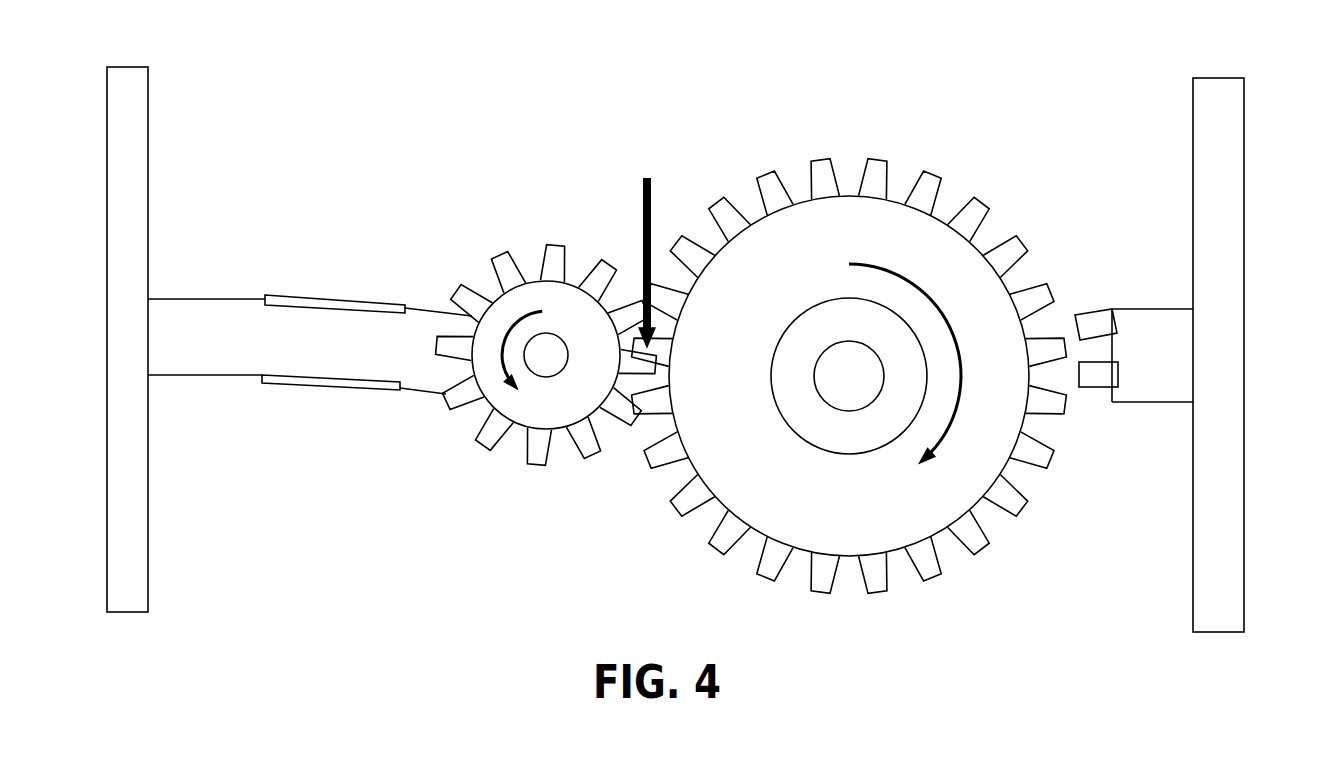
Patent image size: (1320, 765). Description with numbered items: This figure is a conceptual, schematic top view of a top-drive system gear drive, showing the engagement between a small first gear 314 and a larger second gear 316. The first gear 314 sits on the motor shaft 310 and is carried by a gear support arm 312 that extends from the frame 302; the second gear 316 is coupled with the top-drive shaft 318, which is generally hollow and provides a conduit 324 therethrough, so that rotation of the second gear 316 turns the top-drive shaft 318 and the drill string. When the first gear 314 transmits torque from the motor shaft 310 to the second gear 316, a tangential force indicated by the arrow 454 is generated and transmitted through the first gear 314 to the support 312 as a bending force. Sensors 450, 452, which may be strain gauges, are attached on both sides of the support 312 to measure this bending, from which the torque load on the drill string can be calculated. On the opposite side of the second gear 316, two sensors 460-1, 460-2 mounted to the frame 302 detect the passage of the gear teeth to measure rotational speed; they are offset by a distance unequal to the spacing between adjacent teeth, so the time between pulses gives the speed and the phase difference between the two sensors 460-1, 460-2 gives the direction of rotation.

The frame 302 is at (137, 97).
The motor shaft 310 is at (553, 332).
The gear support arm 312 is at (225, 318).
The first gear 314 is at (528, 408).
The second gear 316 is at (950, 270).
The top-drive shaft 318 is at (873, 430).
The conduit 324 is at (833, 386).
The sensor 450 is at (375, 303).
The sensor 452 is at (313, 384).
The arrow 454 is at (653, 200).
The sensor 460-1 is at (1090, 323).
The sensor 460-2 is at (1097, 386).